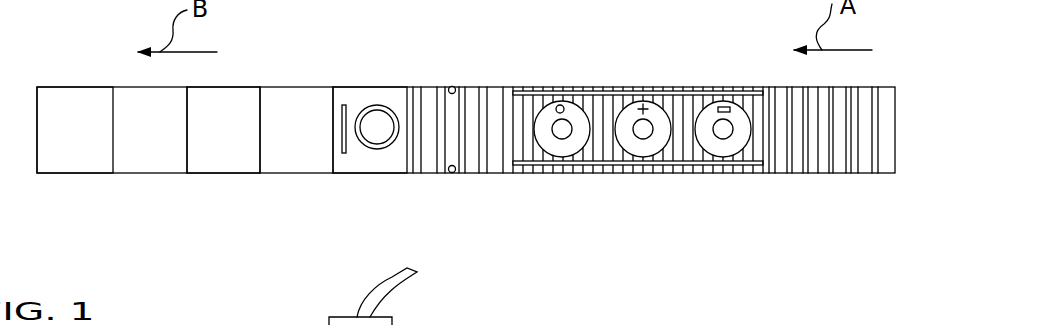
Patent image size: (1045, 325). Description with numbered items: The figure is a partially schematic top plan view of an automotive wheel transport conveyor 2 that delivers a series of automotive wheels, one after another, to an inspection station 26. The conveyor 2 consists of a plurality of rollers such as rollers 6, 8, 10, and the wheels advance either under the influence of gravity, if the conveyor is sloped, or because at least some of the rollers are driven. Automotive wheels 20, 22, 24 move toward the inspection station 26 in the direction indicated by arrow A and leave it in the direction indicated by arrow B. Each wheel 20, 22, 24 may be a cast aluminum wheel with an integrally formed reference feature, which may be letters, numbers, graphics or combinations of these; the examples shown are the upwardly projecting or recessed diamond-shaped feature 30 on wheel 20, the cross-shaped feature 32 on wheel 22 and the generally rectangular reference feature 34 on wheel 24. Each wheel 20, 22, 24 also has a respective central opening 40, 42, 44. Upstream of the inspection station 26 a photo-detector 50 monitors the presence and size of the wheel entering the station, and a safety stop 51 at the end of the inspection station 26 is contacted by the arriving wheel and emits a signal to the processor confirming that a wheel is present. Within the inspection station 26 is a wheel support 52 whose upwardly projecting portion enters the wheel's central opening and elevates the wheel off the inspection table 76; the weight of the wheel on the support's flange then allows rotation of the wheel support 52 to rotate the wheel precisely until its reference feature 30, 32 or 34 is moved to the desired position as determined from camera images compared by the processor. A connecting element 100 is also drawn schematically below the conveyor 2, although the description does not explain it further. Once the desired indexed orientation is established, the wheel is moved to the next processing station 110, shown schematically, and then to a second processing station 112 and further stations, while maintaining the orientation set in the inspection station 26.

The automotive wheel transport conveyor 2 is at (498, 85).
The roller 6 is at (830, 155).
The roller 8 is at (850, 164).
The roller 10 is at (877, 168).
The automotive wheel 20 is at (541, 160).
The automotive wheel 22 is at (643, 160).
The automotive wheel 24 is at (721, 160).
The inspection station 26 is at (378, 84).
The diamond-shaped reference feature 30 is at (577, 103).
The cross-shaped reference feature 32 is at (660, 100).
The rectangular reference feature 34 is at (740, 107).
The central opening 40 is at (542, 143).
The central opening 42 is at (628, 145).
The central opening 44 is at (738, 148).
The photo-detector 50 is at (452, 87).
The safety stop 51 is at (341, 147).
The wheel support 52 is at (378, 145).
The inspection table 76 is at (356, 93).
The cable connector 100 is at (403, 282).
The processing station 110 is at (208, 181).
The second processing station 112 is at (56, 179).